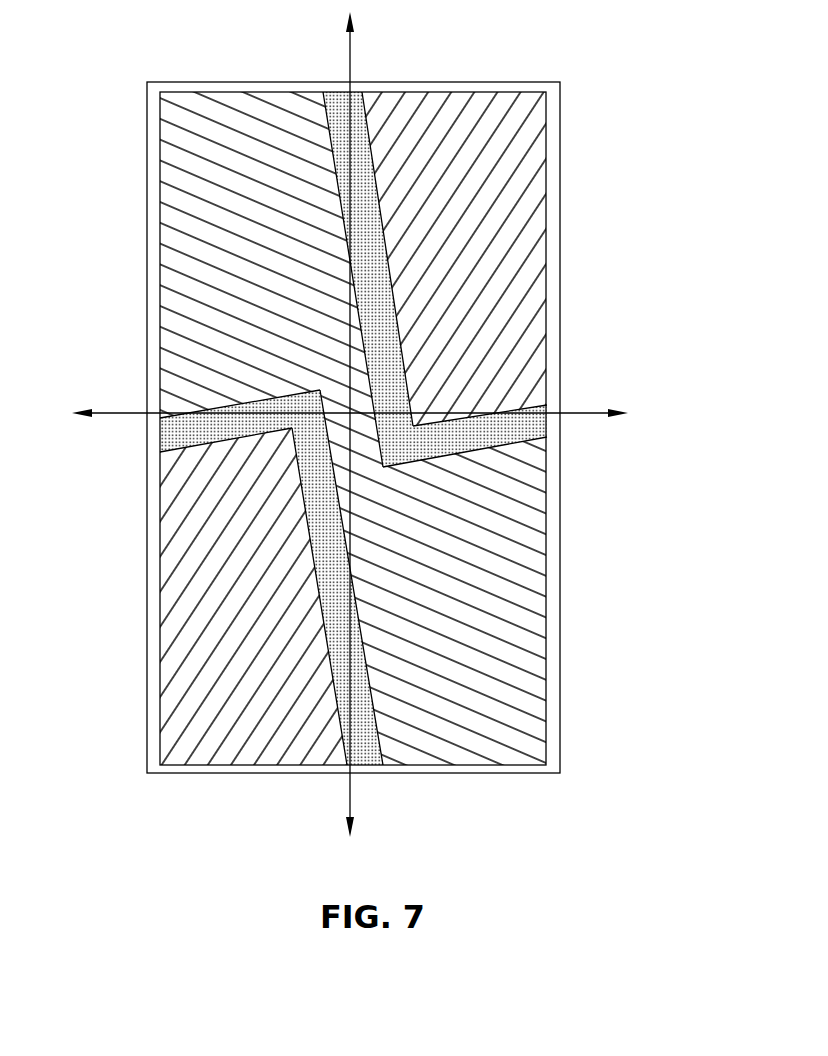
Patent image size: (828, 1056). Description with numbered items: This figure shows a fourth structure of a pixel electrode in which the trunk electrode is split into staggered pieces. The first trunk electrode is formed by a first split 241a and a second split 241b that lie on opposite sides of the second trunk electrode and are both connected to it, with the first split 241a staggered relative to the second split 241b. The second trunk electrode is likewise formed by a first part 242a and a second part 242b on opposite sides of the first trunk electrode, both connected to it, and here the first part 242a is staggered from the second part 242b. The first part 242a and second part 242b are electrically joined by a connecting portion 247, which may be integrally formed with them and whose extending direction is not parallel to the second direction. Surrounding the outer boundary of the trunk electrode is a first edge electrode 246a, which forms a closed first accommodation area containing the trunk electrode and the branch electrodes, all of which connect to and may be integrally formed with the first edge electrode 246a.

The first split 241a is at (370, 277).
The second split 241b is at (330, 562).
The first part 242a is at (192, 428).
The second part 242b is at (495, 415).
The first edge electrode 246a is at (548, 548).
The connecting portion 247 is at (330, 403).